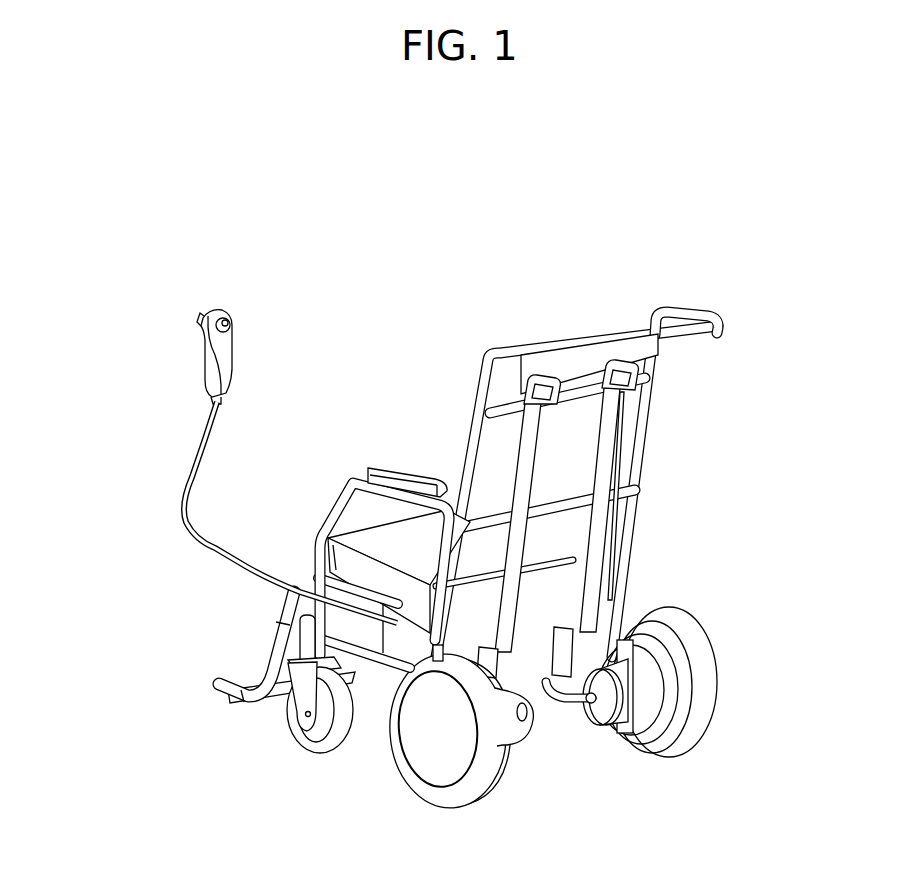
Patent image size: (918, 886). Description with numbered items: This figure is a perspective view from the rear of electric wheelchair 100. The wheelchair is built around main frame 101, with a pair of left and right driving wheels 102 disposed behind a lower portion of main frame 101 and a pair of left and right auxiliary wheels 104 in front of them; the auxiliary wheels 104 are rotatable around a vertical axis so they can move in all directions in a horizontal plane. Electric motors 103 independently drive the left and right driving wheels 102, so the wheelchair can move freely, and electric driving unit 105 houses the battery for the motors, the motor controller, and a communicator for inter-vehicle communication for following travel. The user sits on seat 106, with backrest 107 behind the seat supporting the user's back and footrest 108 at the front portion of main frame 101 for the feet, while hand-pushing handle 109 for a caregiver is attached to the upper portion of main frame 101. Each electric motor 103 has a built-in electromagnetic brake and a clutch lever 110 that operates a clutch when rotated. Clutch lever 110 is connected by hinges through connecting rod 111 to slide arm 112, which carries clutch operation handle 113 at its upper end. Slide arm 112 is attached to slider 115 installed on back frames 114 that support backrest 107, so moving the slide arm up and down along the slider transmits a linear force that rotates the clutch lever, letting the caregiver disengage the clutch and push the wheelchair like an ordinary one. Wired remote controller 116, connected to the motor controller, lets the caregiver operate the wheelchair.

The electric wheelchair 100 is at (313, 224).
The main frame 101 is at (355, 587).
The driving wheels 102 is at (700, 690).
The electric motors 103 is at (640, 703).
The auxiliary wheels 104 is at (298, 725).
The electric driving unit 105 is at (403, 642).
The seat 106 is at (383, 540).
The backrest 107 is at (577, 392).
The footrest 108 is at (253, 677).
The hand-pushing handle 109 is at (680, 332).
The clutch lever 110 is at (560, 694).
The connecting rod 111 is at (487, 670).
The slide arm 112 is at (537, 420).
The clutch operation handle 113 is at (527, 377).
The back frames 114 is at (549, 438).
The slider 115 is at (588, 487).
The wired remote controller 116 is at (228, 352).